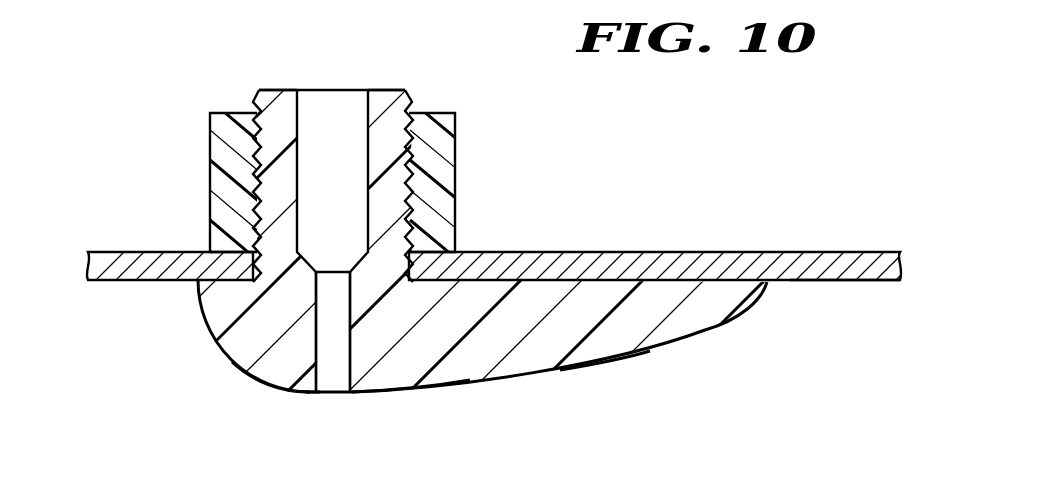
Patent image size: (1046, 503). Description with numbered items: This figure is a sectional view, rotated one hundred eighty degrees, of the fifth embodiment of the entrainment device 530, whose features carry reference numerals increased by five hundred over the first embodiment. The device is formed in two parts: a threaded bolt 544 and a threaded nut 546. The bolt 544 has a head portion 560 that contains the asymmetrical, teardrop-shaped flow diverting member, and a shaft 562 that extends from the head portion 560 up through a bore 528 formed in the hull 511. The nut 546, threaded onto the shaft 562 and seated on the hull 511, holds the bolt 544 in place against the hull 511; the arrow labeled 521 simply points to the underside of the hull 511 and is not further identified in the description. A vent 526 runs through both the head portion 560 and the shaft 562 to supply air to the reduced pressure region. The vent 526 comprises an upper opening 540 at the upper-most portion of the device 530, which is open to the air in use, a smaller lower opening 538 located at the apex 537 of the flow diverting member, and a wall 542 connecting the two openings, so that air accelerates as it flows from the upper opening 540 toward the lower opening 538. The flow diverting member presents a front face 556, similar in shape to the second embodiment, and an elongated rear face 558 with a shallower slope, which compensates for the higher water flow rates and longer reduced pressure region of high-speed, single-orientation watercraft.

The hull 511 is at (683, 258).
The plate lower surface 521 is at (846, 282).
The vent 526 is at (348, 117).
The bore 528 is at (413, 243).
The entrainment device 530 is at (526, 377).
The apex 537 is at (323, 392).
The lower opening 538 is at (334, 395).
The upper opening 540 is at (333, 88).
The wall 542 is at (341, 365).
The threaded bolt 544 is at (222, 318).
The threaded nut 546 is at (222, 152).
The front face 556 is at (227, 360).
The rear face 558 is at (611, 363).
The head portion 560 is at (451, 370).
The shaft 562 is at (284, 105).